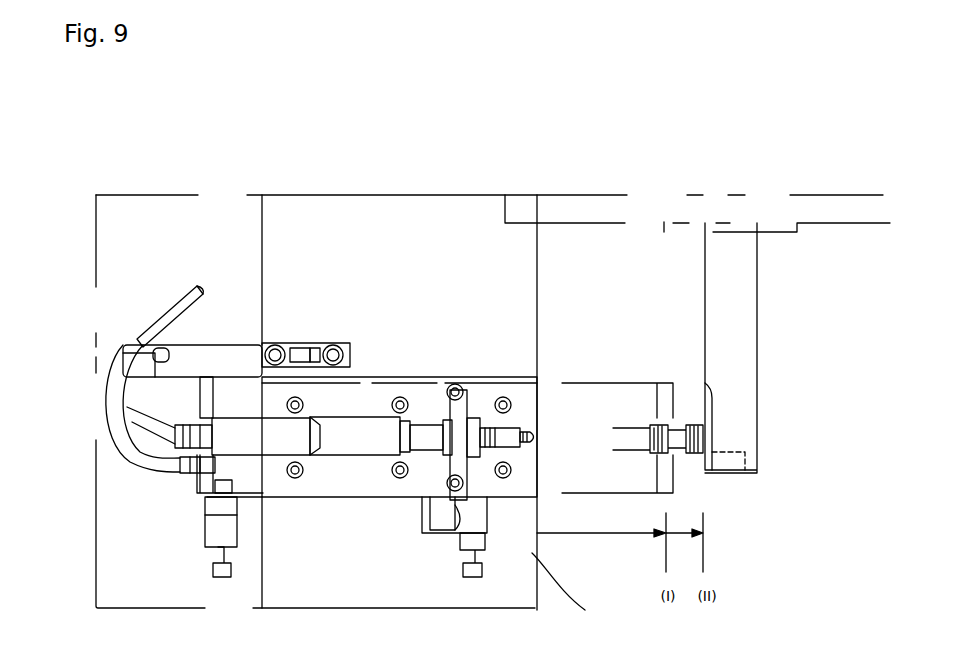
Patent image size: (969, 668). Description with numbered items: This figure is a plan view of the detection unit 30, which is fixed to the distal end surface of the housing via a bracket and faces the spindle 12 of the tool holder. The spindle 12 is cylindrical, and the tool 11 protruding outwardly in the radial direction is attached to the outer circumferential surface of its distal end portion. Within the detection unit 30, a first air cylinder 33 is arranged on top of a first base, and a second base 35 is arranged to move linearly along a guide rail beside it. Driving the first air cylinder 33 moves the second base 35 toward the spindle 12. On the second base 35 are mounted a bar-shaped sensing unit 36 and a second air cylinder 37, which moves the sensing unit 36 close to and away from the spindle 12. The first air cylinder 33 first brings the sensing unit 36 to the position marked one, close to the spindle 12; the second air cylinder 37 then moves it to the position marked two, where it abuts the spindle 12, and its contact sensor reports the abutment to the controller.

The detection unit 30 is at (480, 152).
The spindle 12 is at (750, 348).
The tool 11 is at (708, 471).
The second base 35 is at (366, 400).
The second air cylinder 37 is at (287, 433).
The sensing unit 36 is at (515, 440).
The first air cylinder 33 is at (207, 490).